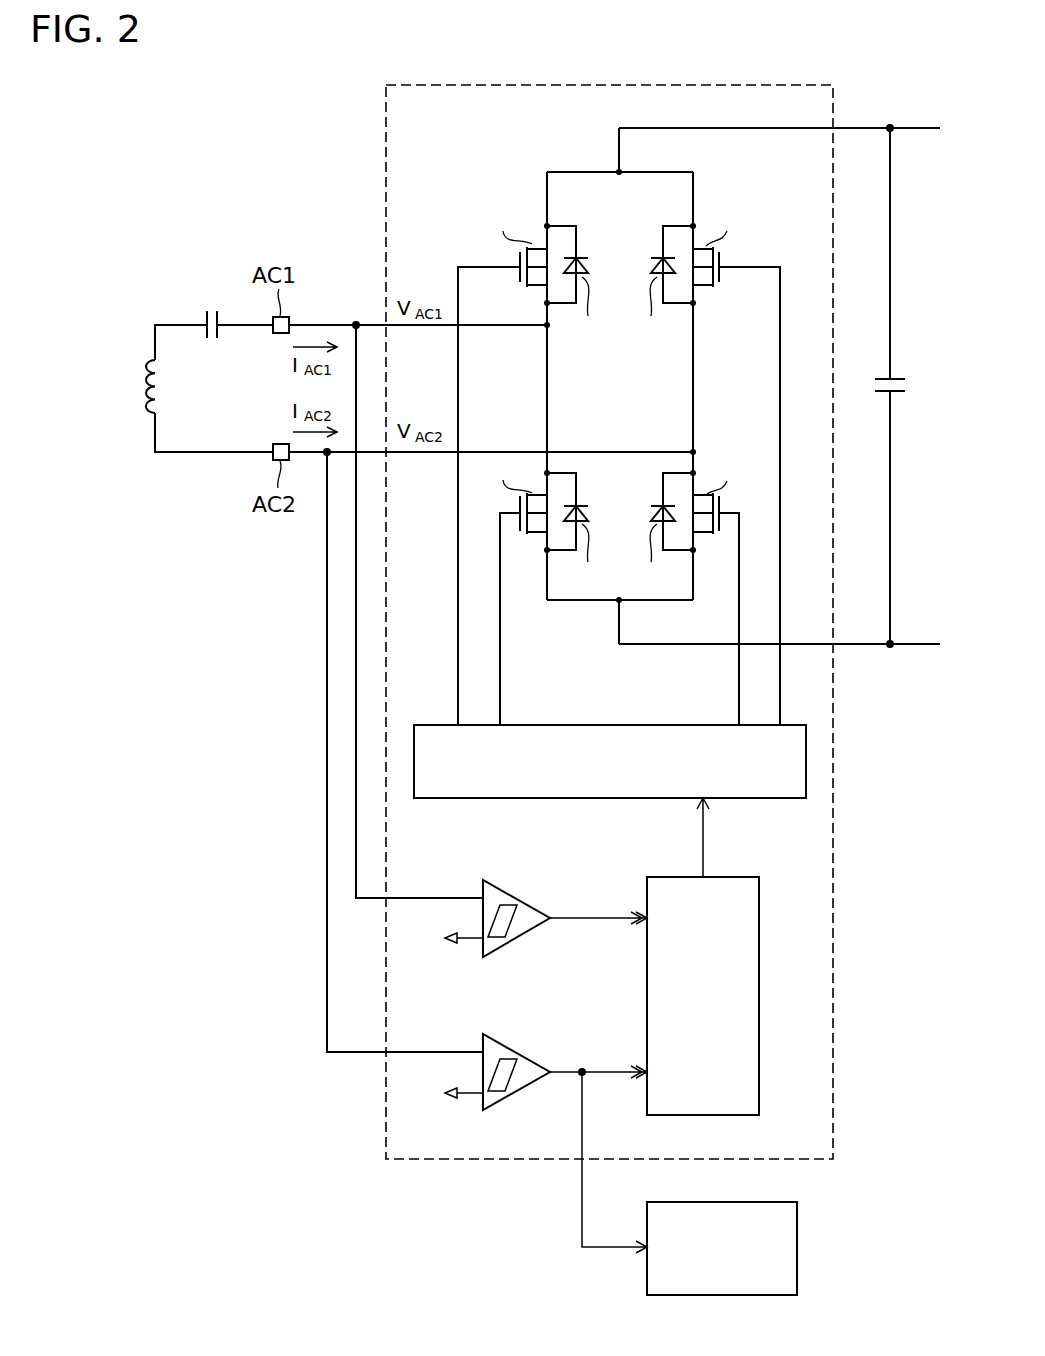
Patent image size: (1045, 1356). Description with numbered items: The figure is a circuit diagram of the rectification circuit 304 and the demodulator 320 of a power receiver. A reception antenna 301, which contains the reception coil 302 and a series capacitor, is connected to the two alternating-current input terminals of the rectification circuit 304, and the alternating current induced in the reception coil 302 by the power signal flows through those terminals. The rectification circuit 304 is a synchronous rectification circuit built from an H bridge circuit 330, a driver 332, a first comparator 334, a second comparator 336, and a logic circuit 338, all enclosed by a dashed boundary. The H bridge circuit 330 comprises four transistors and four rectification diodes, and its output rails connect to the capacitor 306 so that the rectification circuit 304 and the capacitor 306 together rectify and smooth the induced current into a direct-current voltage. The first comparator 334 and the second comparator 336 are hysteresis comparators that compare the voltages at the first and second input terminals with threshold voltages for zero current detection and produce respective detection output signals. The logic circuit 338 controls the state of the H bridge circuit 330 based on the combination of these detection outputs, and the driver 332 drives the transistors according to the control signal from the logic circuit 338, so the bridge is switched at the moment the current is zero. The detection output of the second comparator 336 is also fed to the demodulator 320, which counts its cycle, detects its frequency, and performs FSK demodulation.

The reception antenna 301 is at (180, 421).
The reception coil 302 is at (121, 413).
The rectification circuit 304 is at (833, 103).
The capacitor 306 is at (895, 393).
The demodulator 320 is at (797, 1248).
The H bridge circuit 330 is at (697, 661).
The driver 332 is at (617, 799).
The first comparator 334 is at (507, 892).
The second comparator 336 is at (507, 1047).
The logic circuit 338 is at (759, 978).